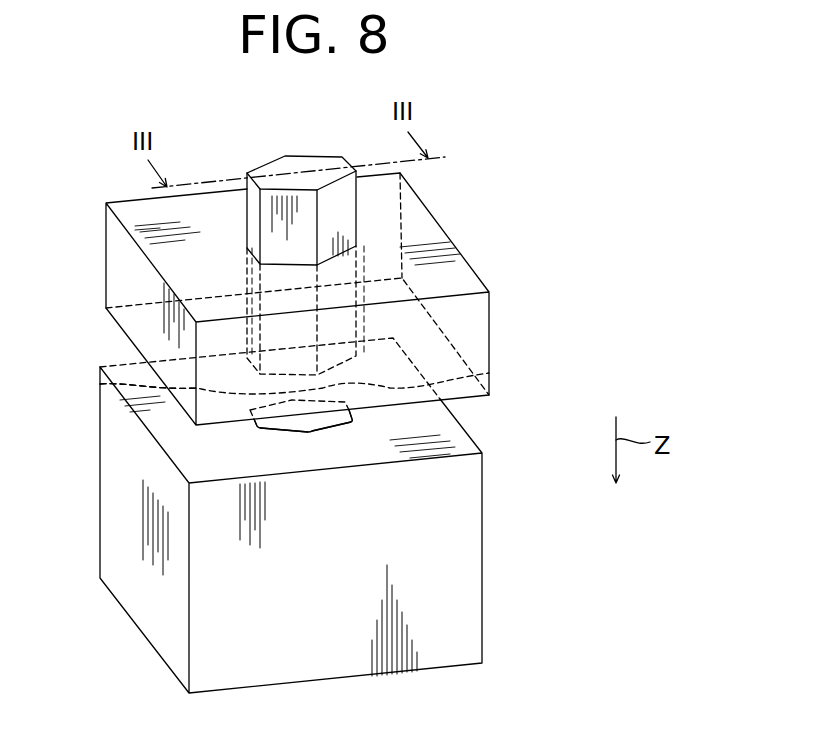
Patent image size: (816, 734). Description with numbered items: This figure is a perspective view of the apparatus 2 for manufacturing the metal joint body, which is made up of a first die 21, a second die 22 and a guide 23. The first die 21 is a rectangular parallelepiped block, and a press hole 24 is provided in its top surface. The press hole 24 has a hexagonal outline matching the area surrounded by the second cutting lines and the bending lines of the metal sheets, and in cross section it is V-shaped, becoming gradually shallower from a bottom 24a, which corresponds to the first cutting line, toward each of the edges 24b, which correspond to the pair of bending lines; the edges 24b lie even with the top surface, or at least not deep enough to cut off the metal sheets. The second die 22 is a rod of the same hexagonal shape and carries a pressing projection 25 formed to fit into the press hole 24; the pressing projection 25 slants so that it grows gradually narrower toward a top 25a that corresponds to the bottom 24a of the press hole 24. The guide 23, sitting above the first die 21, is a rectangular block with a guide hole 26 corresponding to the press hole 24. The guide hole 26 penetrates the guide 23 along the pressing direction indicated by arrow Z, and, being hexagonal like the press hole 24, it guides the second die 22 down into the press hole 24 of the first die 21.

The apparatus for manufacturing metal joint body 2 is at (544, 199).
The first die 21 is at (494, 518).
The second die 22 is at (372, 224).
The guide 23 is at (496, 321).
The press hole 24 is at (320, 425).
The bottom 24a is at (292, 432).
The edges 24b is at (263, 431).
The pressing projection 25 is at (489, 373).
The top 25a is at (100, 384).
The guide hole 26 is at (258, 263).